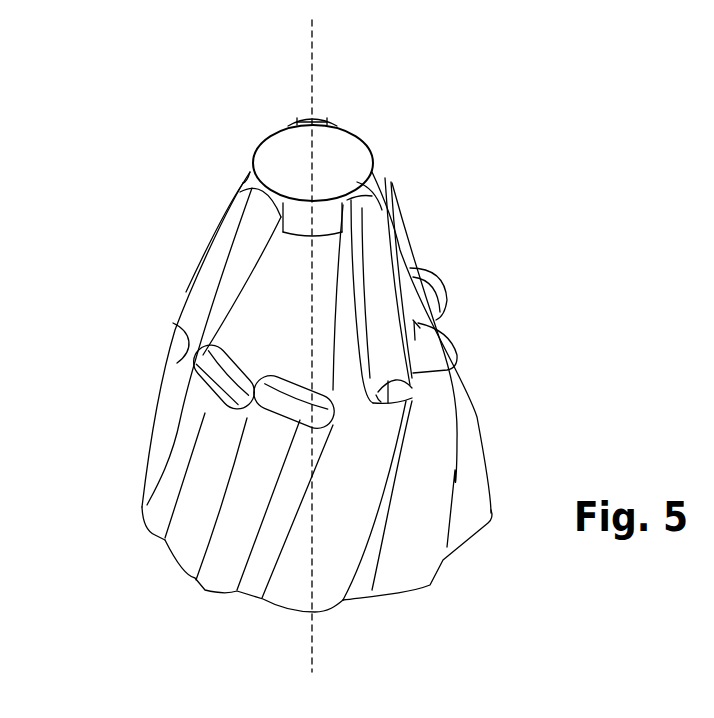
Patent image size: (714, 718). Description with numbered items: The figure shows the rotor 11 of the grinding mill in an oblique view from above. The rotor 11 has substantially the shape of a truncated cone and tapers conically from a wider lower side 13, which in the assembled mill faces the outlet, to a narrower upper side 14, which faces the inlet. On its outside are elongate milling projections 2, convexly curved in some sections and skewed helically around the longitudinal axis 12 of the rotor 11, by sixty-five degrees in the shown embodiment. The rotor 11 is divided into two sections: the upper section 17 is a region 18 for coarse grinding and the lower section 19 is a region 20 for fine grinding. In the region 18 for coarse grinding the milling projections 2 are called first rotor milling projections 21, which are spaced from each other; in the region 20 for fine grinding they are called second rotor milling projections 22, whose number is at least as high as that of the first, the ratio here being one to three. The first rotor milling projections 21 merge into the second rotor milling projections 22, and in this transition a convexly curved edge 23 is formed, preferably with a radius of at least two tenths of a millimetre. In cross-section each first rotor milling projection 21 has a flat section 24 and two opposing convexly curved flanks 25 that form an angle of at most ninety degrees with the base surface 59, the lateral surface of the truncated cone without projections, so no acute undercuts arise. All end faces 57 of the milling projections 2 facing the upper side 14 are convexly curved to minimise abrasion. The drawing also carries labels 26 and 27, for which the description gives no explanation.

The milling projections 2 is at (430, 573).
The rotor 11 is at (352, 110).
The longitudinal axis 12 is at (312, 108).
The lower side 13 is at (262, 606).
The upper side 14 is at (342, 158).
The upper section 17 is at (280, 259).
The region for coarse grinding 18 is at (267, 293).
The lower section 19 is at (425, 531).
The region for fine grinding 20 is at (221, 497).
The first rotor milling projections 21 is at (387, 297).
The second rotor milling projections 22 is at (330, 558).
The convexly curved edge 23 is at (403, 396).
The flat section 24 is at (212, 262).
The convexly curved flanks 25 is at (216, 318).
The side wall 26 is at (173, 440).
The rounded corner 27 is at (160, 514).
The end faces 57 is at (255, 187).
The base surface 59 is at (292, 286).